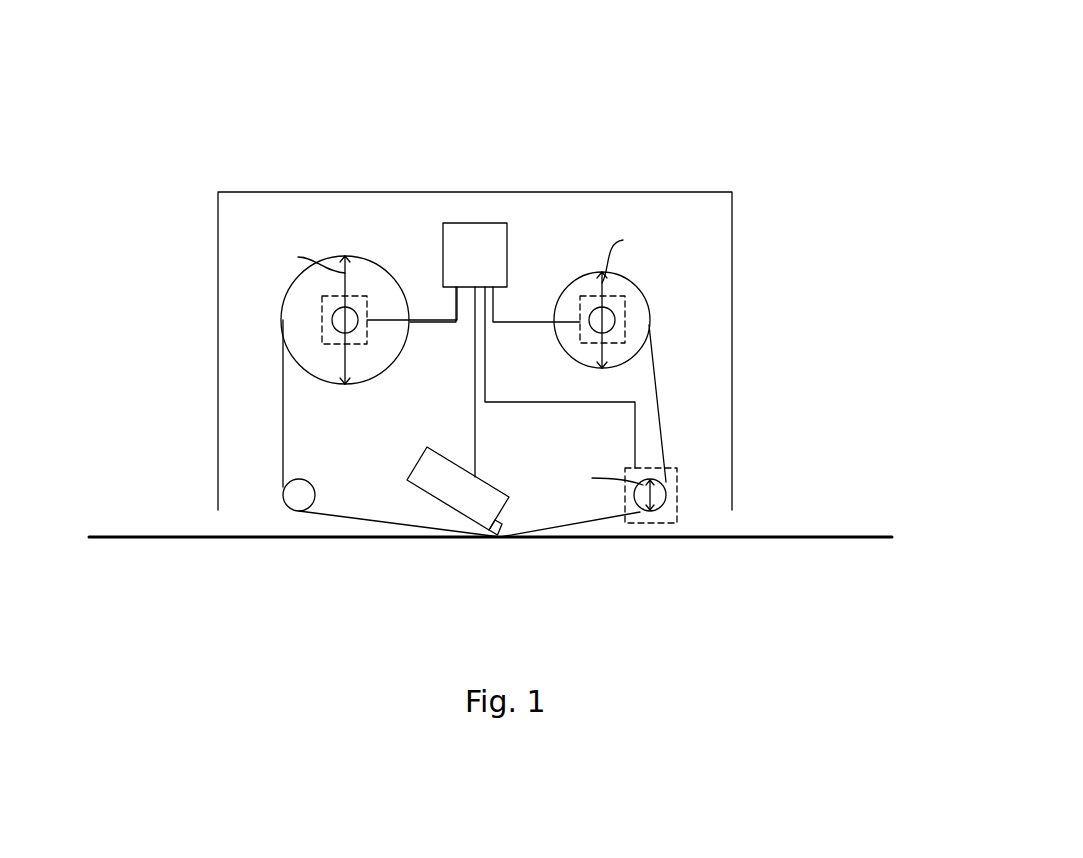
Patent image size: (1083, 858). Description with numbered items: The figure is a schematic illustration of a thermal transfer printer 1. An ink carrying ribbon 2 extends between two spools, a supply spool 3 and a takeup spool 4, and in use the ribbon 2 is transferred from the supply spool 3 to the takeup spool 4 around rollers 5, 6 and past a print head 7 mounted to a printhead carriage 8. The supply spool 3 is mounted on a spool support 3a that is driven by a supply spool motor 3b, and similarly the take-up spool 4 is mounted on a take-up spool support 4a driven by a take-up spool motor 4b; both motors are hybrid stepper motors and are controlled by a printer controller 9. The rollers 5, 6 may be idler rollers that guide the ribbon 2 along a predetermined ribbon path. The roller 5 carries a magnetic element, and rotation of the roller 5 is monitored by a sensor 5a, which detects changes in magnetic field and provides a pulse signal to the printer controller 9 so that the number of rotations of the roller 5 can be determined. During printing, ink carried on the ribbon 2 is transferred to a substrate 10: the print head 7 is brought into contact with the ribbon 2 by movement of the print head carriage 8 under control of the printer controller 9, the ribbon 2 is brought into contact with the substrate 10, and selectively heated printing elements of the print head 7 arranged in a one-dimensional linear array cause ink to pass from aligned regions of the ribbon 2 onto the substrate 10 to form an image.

The thermal transfer printer 1 is at (187, 160).
The ink carrying ribbon 2 is at (283, 394).
The supply spool 3 is at (345, 256).
The spool support 3a is at (332, 322).
The supply spool motor 3b is at (355, 296).
The take-up spool 4 is at (640, 283).
The take-up spool support 4a is at (613, 315).
The take-up spool motor 4b is at (620, 343).
The roller 5 is at (665, 495).
The sensor 5a is at (643, 523).
The roller 6 is at (283, 487).
The print head 7 is at (500, 537).
The printhead carriage 8 is at (447, 488).
The printer controller 9 is at (480, 243).
The substrate 10 is at (643, 538).